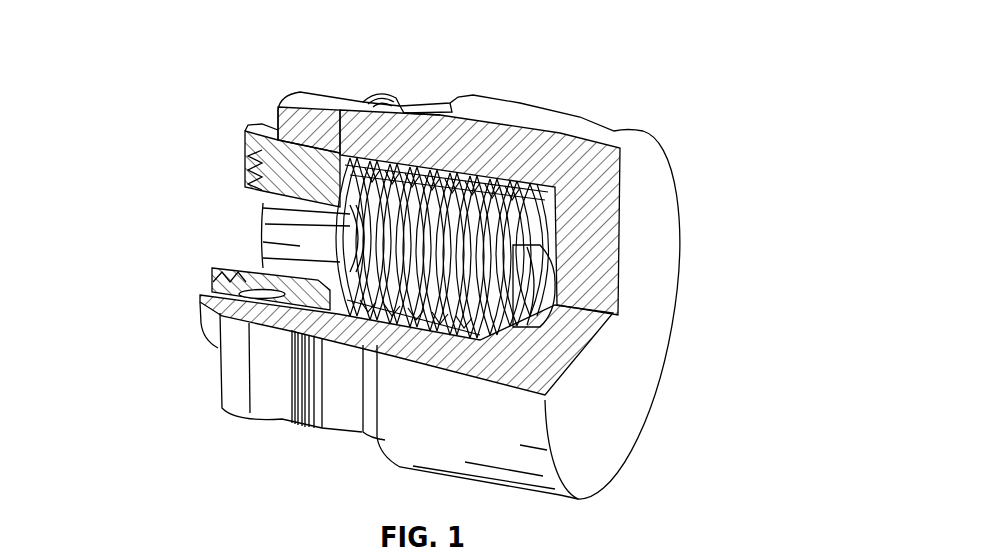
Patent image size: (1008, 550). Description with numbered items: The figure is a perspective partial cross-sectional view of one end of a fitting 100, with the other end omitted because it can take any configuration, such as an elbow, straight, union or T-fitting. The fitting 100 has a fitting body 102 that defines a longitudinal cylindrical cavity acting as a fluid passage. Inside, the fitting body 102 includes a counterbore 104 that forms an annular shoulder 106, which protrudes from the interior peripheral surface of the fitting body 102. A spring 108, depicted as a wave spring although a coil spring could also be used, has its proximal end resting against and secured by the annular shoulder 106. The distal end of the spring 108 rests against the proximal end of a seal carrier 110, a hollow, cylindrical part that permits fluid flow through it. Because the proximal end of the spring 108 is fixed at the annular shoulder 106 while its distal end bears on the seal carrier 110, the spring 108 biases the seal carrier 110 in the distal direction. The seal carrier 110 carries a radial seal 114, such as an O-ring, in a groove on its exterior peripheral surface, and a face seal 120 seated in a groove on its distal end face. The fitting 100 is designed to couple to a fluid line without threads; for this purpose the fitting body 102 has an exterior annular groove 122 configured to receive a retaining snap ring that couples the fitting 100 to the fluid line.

The fitting 100 is at (238, 48).
The fitting body 102 is at (620, 130).
The counterbore 104 is at (352, 280).
The annular shoulder 106 is at (545, 155).
The spring 108 is at (437, 122).
The seal carrier 110 is at (263, 128).
The radial seal 114 is at (291, 143).
The face seal 120 is at (248, 167).
The exterior annular groove 122 is at (380, 107).